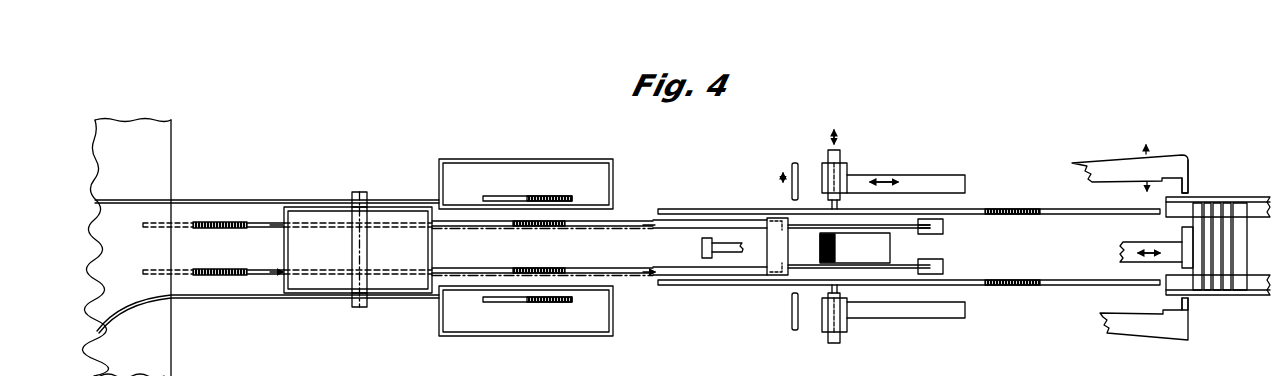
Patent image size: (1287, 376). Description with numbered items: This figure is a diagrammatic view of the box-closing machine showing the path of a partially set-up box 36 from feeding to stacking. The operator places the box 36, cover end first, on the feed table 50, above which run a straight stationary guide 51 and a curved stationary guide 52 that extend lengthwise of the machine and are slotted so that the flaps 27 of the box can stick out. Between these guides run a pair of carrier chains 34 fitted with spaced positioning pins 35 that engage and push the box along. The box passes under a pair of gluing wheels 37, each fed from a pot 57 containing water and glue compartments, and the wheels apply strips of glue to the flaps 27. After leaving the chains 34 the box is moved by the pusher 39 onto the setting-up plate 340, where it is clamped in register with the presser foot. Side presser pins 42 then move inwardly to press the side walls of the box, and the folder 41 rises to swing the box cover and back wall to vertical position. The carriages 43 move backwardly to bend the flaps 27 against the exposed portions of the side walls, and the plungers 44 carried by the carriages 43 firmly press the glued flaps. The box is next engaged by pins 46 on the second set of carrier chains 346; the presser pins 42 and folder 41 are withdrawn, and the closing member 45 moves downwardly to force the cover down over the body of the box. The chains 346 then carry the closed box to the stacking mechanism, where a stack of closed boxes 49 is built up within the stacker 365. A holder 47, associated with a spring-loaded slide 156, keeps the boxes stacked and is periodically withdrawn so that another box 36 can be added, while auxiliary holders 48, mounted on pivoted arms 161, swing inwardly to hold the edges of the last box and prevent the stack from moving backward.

The feed table 50 is at (166, 155).
The straight stationary guide 51 is at (214, 200).
The curved stationary guide 52 is at (195, 300).
The carrier chains 34 is at (212, 232).
The positioning pins 35 is at (270, 270).
The partially set-up box 36 is at (301, 207).
The flaps 27 is at (360, 192).
The gluing wheels 37 is at (510, 195).
The pot 57 is at (581, 162).
The pusher 39 is at (702, 248).
The setting-up plate 340 is at (772, 253).
The carrier chains 346 is at (1043, 214).
The folder 41 is at (883, 247).
The closing member 45 is at (897, 223).
The side presser pins 42 is at (792, 190).
The carriages 43 is at (911, 178).
The plungers 44 is at (840, 157).
The pins 46 is at (827, 208).
The stack of closed boxes 49 is at (1210, 216).
The stacker 365 is at (1232, 297).
The holder 47 is at (1188, 243).
The slide 156 is at (1128, 261).
The arms 161 is at (1112, 164).
The auxiliary holders 48 is at (1190, 188).